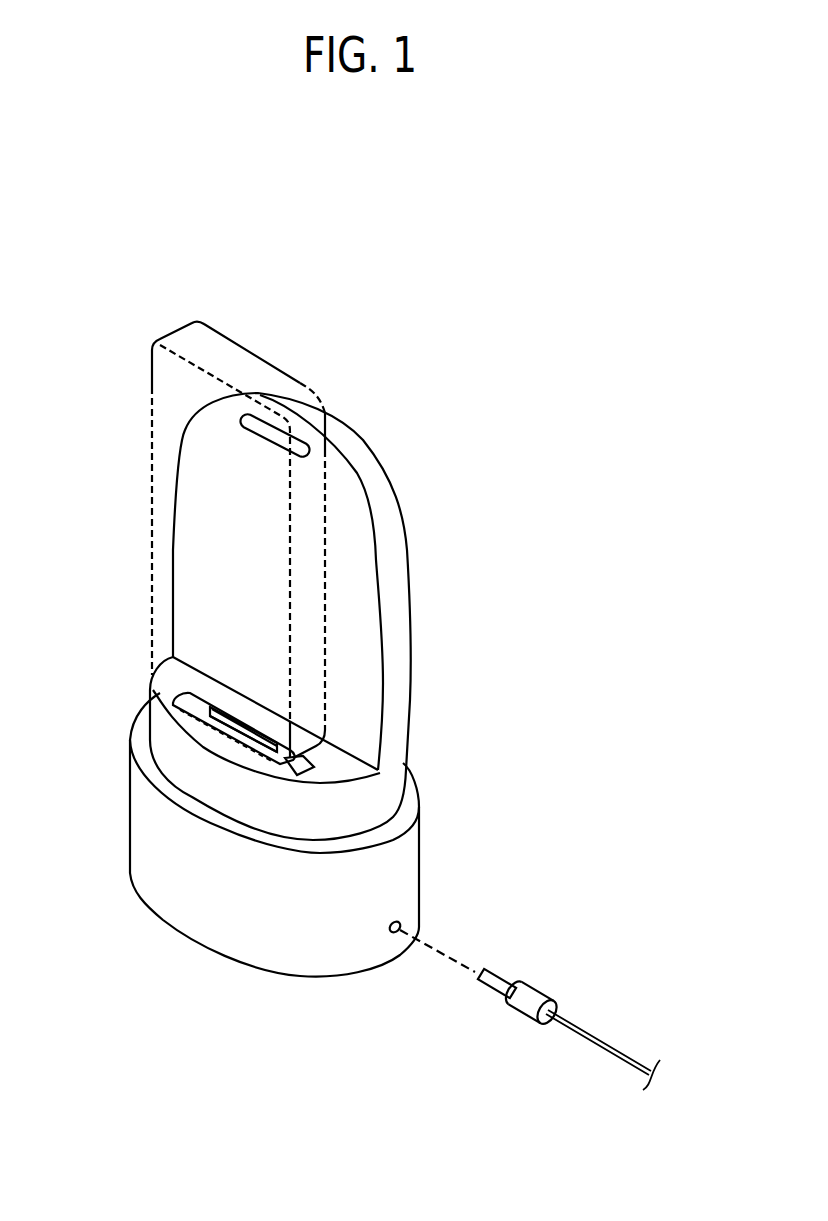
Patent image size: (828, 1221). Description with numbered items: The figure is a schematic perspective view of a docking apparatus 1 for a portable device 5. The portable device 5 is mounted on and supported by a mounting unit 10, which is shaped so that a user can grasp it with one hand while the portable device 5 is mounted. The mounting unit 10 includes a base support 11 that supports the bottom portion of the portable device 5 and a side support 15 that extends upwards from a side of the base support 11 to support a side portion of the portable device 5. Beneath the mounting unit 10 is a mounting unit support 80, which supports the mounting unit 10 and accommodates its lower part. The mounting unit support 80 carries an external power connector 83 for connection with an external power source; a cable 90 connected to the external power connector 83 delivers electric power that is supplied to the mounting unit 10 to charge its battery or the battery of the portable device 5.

The docking apparatus 1 is at (395, 698).
The portable device 5 is at (150, 389).
The mounting unit 10 is at (349, 616).
The base support 11 is at (325, 748).
The side support 15 is at (363, 623).
The mounting unit support 80 is at (274, 869).
The external power connector 83 is at (395, 935).
The cable 90 is at (607, 1042).